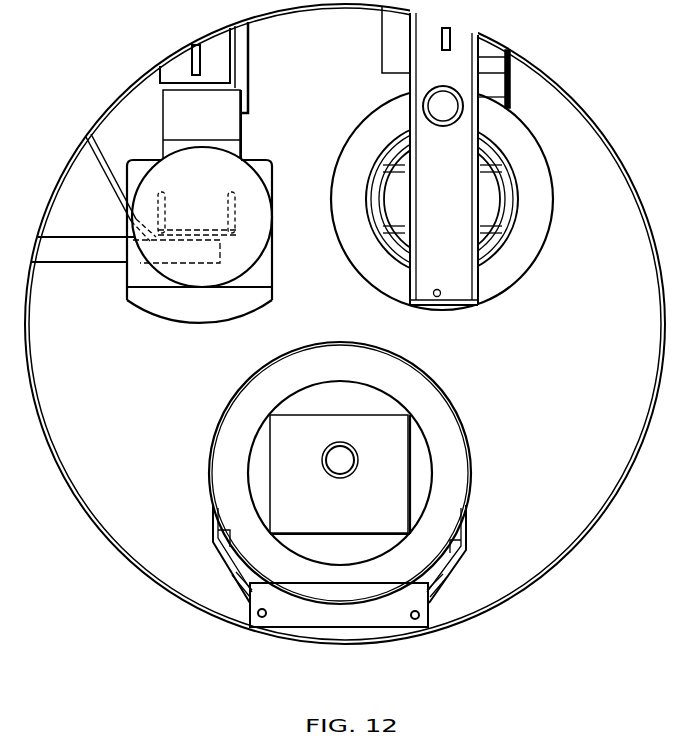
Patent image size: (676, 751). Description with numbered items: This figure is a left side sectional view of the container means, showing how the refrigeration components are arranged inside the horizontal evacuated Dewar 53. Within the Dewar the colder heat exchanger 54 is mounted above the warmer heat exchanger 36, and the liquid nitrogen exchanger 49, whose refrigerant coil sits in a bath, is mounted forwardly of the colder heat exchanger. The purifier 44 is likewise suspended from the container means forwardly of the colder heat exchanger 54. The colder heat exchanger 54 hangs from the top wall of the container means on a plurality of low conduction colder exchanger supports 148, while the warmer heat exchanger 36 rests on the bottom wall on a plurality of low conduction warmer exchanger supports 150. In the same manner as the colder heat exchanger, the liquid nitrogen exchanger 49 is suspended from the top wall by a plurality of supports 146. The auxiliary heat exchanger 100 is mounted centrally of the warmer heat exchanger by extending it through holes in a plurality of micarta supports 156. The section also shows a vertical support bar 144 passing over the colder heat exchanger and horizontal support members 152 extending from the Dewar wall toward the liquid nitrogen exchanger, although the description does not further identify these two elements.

The warmer heat exchanger 36 is at (218, 568).
The purifier 44 is at (149, 312).
The liquid nitrogen exchanger 49 is at (257, 265).
The horizontal evacuated Dewar 53 is at (76, 506).
The colder heat exchanger 54 is at (556, 224).
The auxiliary heat exchanger 100 is at (352, 449).
The vertical support bar 144 is at (481, 60).
The supports 146 is at (231, 67).
The low conduction colder exchanger supports 148 is at (509, 98).
The low conduction warmer exchanger supports 150 is at (425, 621).
The horizontal support members 152 is at (78, 236).
The micarta supports 156 is at (392, 489).